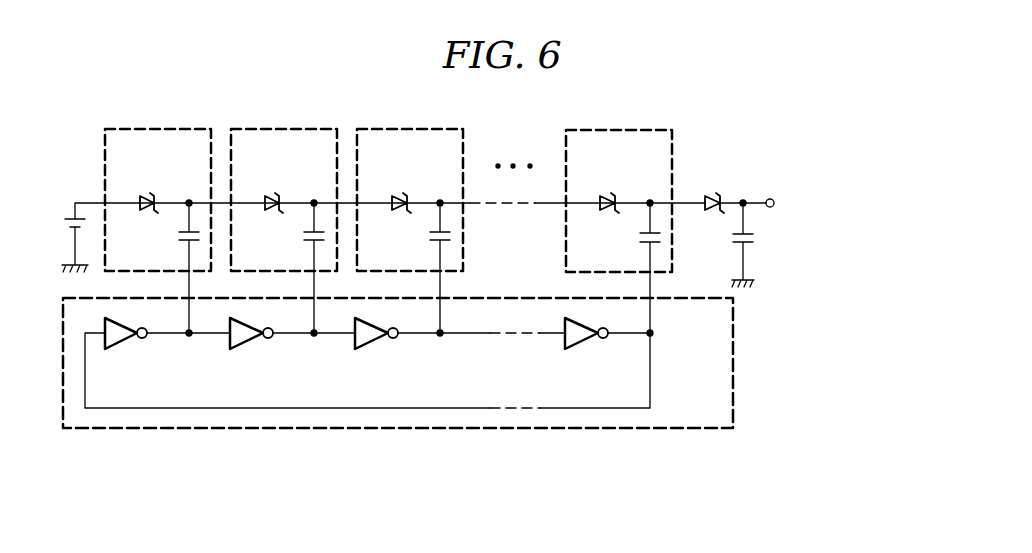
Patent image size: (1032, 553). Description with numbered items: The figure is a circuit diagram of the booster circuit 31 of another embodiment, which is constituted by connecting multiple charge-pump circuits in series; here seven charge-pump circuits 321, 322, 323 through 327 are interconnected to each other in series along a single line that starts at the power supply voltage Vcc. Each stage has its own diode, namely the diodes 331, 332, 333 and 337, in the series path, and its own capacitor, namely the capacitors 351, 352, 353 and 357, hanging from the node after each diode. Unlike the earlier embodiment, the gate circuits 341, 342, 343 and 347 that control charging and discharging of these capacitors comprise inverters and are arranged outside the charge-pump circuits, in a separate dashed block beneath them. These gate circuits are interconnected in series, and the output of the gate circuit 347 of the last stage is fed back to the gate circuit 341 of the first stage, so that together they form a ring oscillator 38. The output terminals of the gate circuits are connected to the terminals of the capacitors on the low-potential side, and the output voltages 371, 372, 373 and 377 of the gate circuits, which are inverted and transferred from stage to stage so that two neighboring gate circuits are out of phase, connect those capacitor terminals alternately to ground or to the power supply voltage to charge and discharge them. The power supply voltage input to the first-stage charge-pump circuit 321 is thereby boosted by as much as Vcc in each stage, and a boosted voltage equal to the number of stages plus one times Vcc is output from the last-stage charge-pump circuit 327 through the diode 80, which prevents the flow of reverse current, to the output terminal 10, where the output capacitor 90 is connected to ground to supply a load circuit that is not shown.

The booster circuit 31 is at (738, 92).
The charge-pump circuit 321 is at (147, 129).
The charge-pump circuit 322 is at (272, 129).
The charge-pump circuit 323 is at (397, 129).
The charge-pump circuit 327 is at (627, 130).
The diode 331 is at (151, 194).
The diode 332 is at (276, 194).
The diode 333 is at (403, 194).
The diode 337 is at (611, 194).
The capacitor 351 is at (178, 236).
The capacitor 352 is at (303, 236).
The capacitor 353 is at (428, 236).
The capacitor 357 is at (638, 237).
The gate circuit 341 is at (128, 346).
The gate circuit 342 is at (254, 346).
The gate circuit 343 is at (379, 346).
The gate circuit 347 is at (589, 346).
The output voltage 371 is at (189, 338).
The output voltage 372 is at (315, 338).
The output voltage 373 is at (441, 338).
The output voltage 377 is at (652, 335).
The ring oscillator 38 is at (733, 365).
The diode 80 is at (716, 195).
The output terminal 10 is at (771, 198).
The output capacitor 90 is at (756, 238).